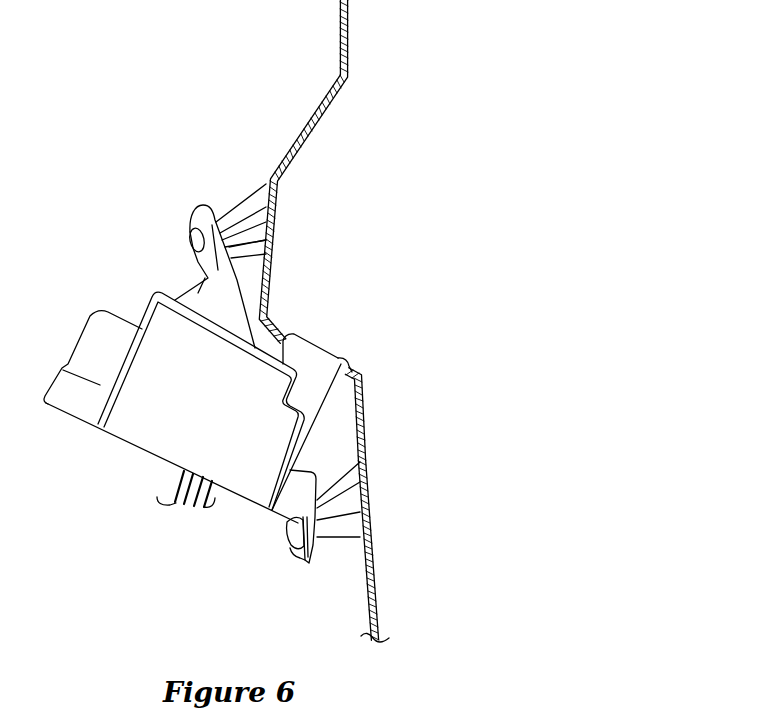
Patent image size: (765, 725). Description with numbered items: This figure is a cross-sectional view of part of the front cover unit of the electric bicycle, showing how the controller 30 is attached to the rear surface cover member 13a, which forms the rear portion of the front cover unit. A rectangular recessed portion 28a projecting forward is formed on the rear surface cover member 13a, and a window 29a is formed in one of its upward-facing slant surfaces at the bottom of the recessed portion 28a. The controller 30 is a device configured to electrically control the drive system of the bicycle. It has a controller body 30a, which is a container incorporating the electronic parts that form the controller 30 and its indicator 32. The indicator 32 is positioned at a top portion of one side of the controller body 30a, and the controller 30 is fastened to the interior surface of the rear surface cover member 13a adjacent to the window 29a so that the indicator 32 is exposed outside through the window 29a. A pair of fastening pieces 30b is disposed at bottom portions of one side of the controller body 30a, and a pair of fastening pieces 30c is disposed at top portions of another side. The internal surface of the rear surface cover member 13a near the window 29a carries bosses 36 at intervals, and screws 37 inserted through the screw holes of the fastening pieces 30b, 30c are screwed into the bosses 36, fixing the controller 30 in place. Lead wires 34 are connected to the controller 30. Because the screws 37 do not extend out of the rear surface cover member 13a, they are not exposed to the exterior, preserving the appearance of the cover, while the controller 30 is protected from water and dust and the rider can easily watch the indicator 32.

The rear surface cover member 13a is at (349, 11).
The recessed portion 28a is at (275, 210).
The window 29a is at (338, 358).
The controller 30 is at (180, 391).
The controller body 30a is at (128, 432).
The fastening pieces 30b is at (304, 562).
The fastening pieces 30c is at (205, 205).
The indicator 32 is at (300, 345).
The lead wires 34 is at (216, 505).
The bosses 36 is at (247, 203).
The screws 37 is at (190, 242).